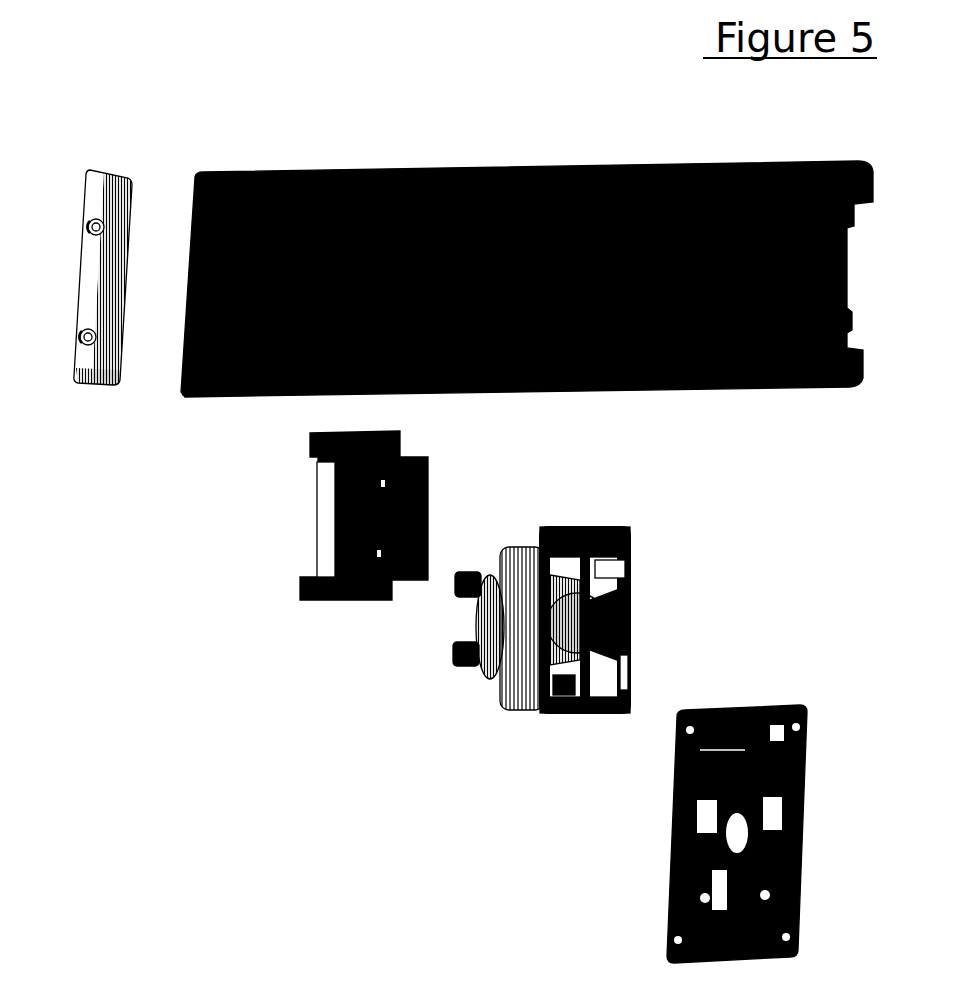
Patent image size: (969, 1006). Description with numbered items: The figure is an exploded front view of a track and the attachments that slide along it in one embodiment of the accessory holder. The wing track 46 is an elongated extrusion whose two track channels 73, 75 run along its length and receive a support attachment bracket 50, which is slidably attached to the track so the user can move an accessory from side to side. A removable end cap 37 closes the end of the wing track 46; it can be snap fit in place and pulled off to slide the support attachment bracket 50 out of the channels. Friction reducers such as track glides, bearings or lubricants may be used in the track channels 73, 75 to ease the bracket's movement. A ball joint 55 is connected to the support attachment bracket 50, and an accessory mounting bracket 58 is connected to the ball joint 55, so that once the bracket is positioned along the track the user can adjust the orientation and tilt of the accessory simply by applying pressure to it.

The end cap 37 is at (83, 390).
The wing track 46 is at (433, 167).
The track channel 73 is at (205, 197).
The track channel 75 is at (198, 382).
The support attachment bracket 50 is at (315, 600).
The ball joint 55 is at (495, 698).
The accessory mounting bracket 58 is at (667, 917).